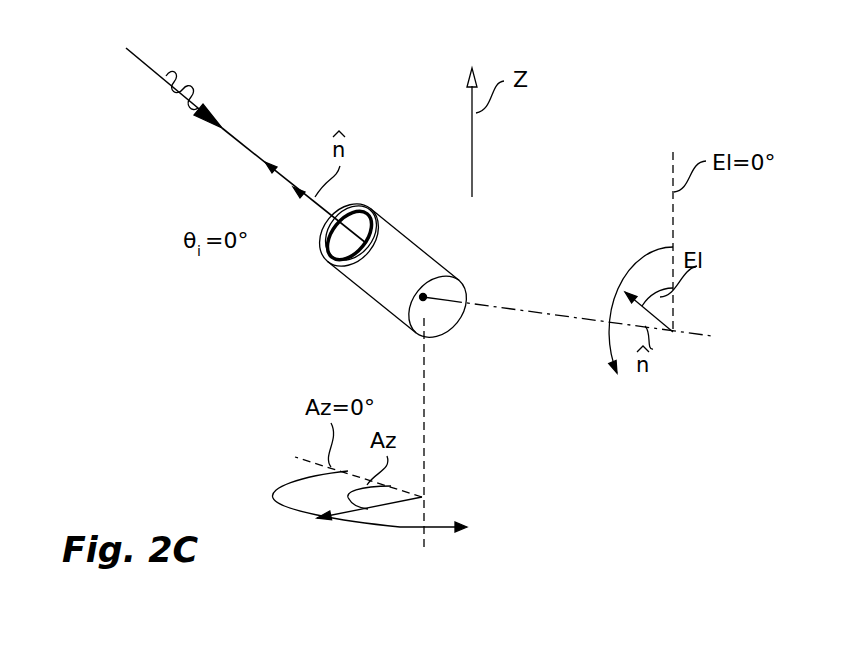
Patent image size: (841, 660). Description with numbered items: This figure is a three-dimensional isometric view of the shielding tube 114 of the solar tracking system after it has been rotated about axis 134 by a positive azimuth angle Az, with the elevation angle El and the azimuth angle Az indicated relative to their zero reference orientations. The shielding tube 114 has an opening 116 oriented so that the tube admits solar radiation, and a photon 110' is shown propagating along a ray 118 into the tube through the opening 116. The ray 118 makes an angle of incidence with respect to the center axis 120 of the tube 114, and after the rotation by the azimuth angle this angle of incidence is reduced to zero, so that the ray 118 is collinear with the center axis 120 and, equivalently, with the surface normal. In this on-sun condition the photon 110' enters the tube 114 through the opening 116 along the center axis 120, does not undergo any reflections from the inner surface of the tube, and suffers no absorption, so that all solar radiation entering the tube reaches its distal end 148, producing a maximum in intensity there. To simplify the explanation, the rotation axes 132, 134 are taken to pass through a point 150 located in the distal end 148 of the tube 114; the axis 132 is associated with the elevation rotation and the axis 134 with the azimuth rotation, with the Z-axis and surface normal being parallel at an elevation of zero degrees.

The ray 118 is at (148, 64).
The photon 110' is at (162, 105).
The center axis 120 is at (278, 177).
The opening 116 is at (364, 207).
The shielding tube 114 is at (383, 291).
The distal end 148 is at (408, 327).
The point 150 is at (442, 258).
The rotation axis 132 is at (548, 313).
The rotation axis 134 is at (426, 398).